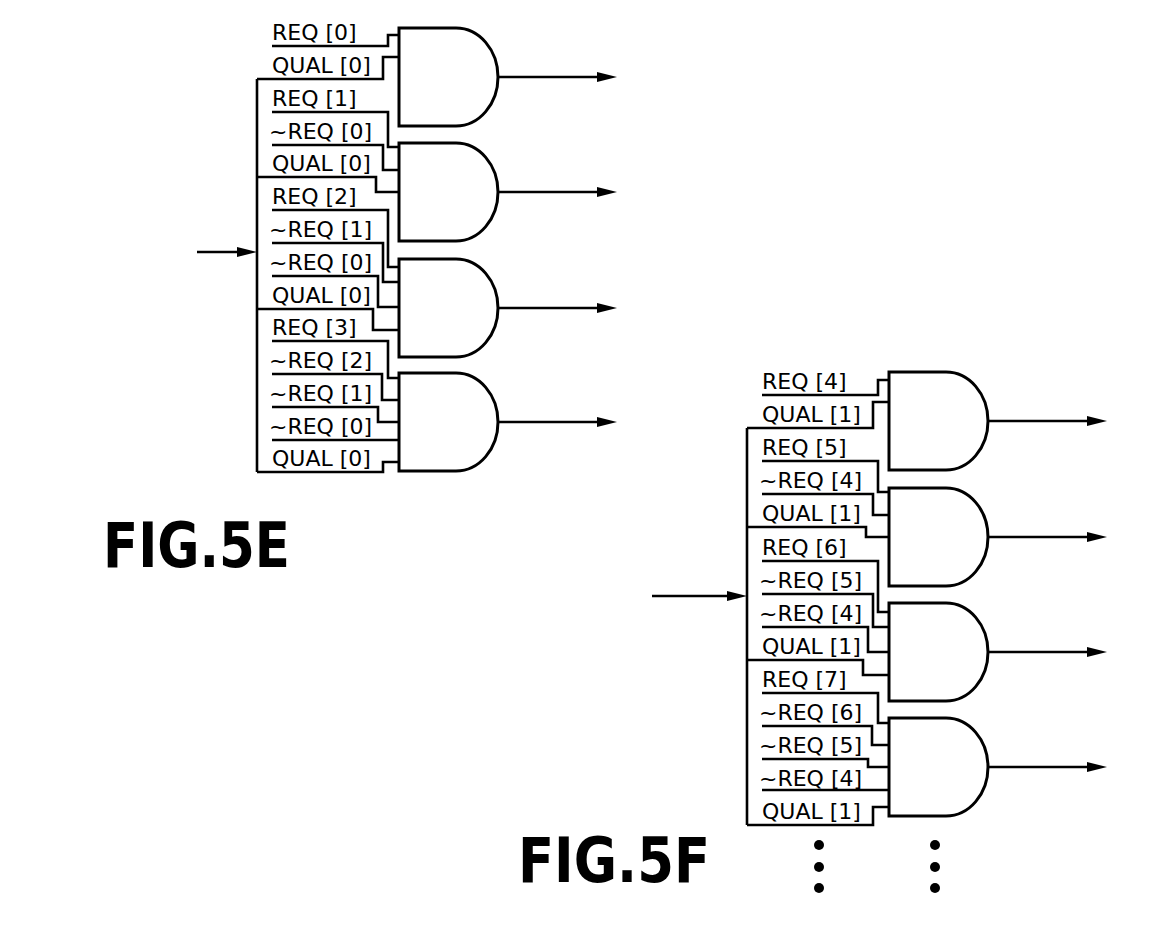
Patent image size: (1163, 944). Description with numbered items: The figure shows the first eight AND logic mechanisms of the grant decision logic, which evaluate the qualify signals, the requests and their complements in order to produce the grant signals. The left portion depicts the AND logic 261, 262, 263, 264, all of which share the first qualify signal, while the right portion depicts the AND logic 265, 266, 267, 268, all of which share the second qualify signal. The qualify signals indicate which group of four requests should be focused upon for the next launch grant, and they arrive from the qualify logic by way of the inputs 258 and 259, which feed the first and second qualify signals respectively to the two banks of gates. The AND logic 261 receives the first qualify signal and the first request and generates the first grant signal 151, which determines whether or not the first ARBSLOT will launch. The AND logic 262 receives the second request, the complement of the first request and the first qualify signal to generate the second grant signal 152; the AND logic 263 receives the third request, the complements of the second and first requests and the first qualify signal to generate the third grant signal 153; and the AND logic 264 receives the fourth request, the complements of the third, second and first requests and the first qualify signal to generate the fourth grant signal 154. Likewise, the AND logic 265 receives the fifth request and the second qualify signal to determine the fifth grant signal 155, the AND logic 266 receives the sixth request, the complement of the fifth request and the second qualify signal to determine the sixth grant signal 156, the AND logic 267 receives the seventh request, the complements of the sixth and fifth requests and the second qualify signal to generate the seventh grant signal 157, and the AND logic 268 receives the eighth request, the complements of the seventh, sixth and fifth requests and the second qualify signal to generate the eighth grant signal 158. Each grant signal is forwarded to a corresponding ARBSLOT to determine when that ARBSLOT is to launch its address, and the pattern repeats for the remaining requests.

In FIG. 5E, the grant signal GRANT[0] 151 is at (550, 77).
In FIG. 5E, the grant signal GRANT[1] 152 is at (550, 192).
In FIG. 5E, the grant signal GRANT[2] 153 is at (550, 308).
In FIG. 5E, the grant signal GRANT[3] 154 is at (550, 422).
In FIG. 5F, the grant signal GRANT[4] 155 is at (1040, 421).
In FIG. 5F, the grant signal GRANT[5] 156 is at (1040, 537).
In FIG. 5F, the grant signal GRANT[6] 157 is at (1040, 652).
In FIG. 5F, the grant signal GRANT[7] 158 is at (1040, 767).
In FIG. 5E, the input from FIG. 5D (QUAL[0]) 258 is at (212, 254).
In FIG. 5F, the input from FIG. 5D (QUAL[1]) 259 is at (680, 598).
In FIG. 5E, the AND logic 261 is at (477, 123).
In FIG. 5E, the AND logic 262 is at (477, 238).
In FIG. 5E, the AND logic 263 is at (477, 354).
In FIG. 5E, the AND logic 264 is at (477, 468).
In FIG. 5F, the AND logic 265 is at (967, 467).
In FIG. 5F, the AND logic 266 is at (967, 583).
In FIG. 5F, the AND logic 267 is at (967, 698).
In FIG. 5F, the AND logic 268 is at (962, 810).